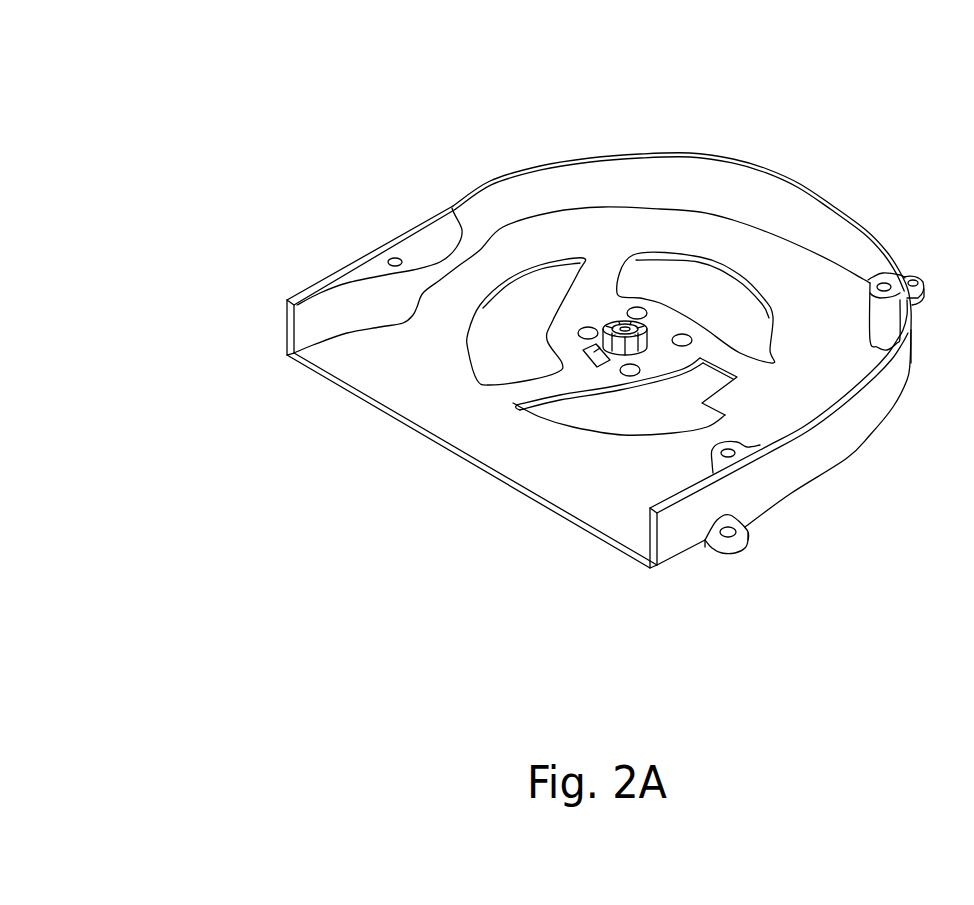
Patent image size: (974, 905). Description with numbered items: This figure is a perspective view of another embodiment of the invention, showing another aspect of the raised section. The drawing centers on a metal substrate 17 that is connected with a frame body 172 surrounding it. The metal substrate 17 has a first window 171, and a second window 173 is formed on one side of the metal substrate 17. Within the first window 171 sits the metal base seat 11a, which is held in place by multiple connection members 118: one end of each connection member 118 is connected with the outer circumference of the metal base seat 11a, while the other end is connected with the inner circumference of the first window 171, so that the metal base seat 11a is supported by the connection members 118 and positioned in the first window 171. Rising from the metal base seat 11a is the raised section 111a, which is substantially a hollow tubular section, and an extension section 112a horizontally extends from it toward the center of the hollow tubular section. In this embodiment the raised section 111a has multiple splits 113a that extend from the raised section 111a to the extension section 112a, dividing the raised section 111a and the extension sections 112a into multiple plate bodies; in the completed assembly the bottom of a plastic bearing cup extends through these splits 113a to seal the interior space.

The metal base seat 11a is at (665, 323).
The raised section 111a is at (735, 376).
The extension section 112a is at (613, 320).
The splits 113a is at (627, 353).
The connection members 118 is at (520, 410).
The metal substrate 17 is at (400, 375).
The first window 171 is at (520, 345).
The frame body 172 is at (450, 208).
The second window 173 is at (450, 408).